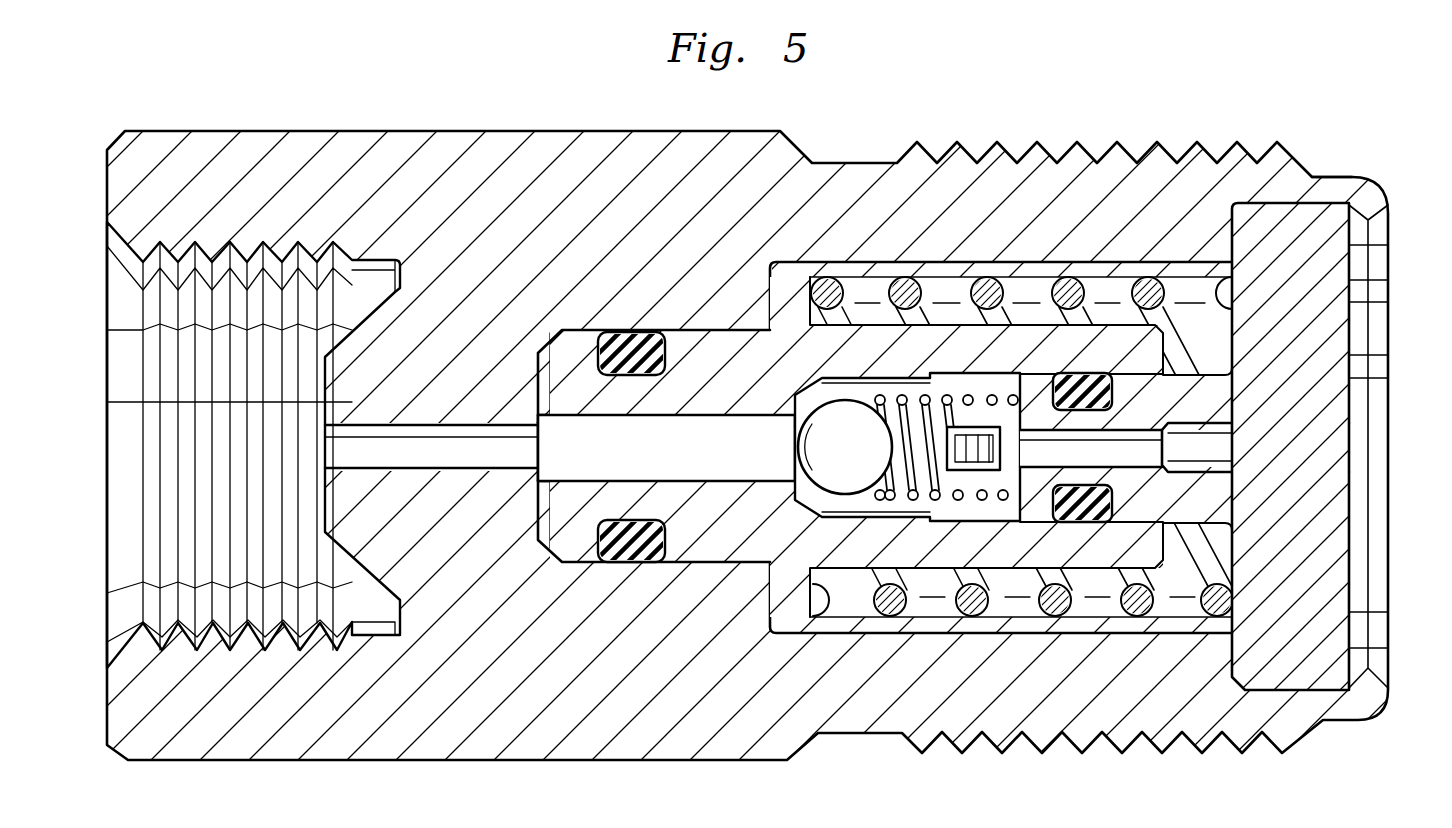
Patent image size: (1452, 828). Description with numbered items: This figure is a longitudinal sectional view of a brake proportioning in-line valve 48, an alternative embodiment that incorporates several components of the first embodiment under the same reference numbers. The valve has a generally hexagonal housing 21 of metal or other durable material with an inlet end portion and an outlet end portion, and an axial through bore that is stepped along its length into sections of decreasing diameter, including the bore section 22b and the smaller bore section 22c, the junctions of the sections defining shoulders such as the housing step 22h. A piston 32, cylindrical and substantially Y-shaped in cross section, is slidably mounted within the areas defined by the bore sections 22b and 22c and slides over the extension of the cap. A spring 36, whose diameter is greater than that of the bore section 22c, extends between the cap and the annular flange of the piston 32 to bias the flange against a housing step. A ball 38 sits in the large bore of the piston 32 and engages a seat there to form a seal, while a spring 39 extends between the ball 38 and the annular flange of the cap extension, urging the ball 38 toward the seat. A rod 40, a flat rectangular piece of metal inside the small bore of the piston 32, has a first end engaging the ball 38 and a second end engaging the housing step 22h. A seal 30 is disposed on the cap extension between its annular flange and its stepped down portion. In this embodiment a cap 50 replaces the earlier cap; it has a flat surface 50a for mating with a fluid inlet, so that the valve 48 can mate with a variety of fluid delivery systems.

The housing 21 is at (513, 251).
The bore section 22b is at (992, 635).
The bore section 22c is at (688, 558).
The housing step 22h is at (548, 556).
The seal 30 is at (1092, 377).
The piston 32 is at (713, 375).
The spring 36 is at (878, 576).
The ball 38 is at (831, 456).
The spring 39 is at (926, 397).
The rod 40 is at (644, 456).
The brake proportioning in-line valve 48 is at (1322, 136).
The cap 50 is at (1332, 306).
The flat surface 50a is at (1350, 381).